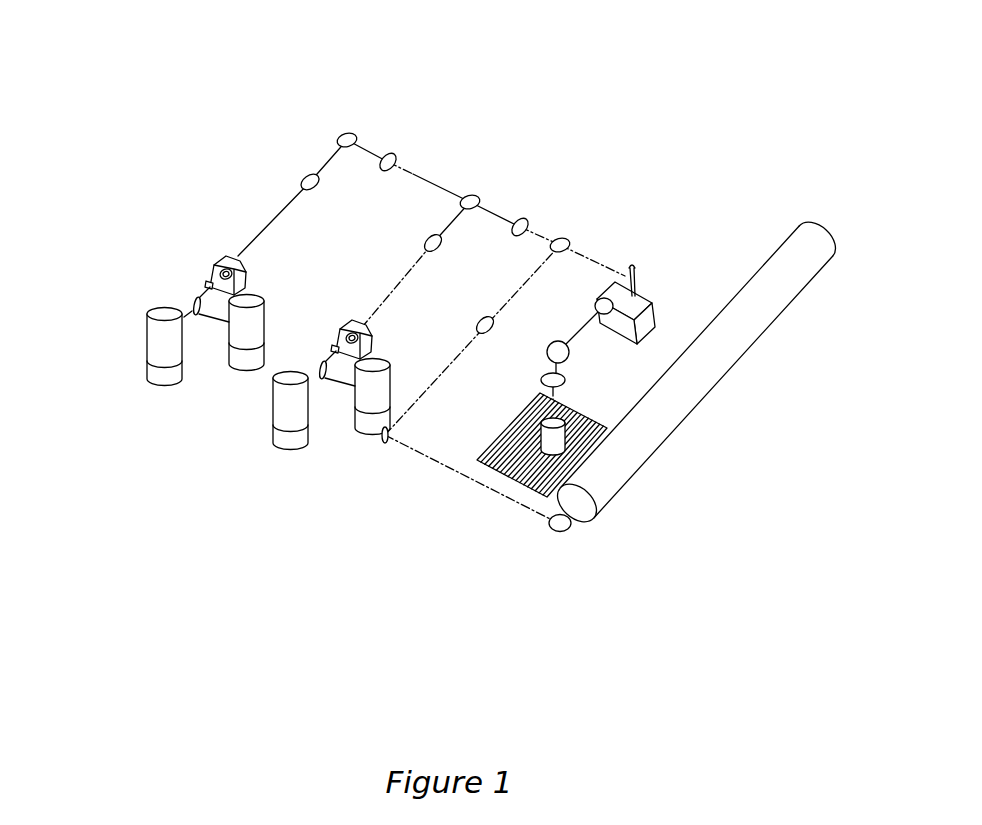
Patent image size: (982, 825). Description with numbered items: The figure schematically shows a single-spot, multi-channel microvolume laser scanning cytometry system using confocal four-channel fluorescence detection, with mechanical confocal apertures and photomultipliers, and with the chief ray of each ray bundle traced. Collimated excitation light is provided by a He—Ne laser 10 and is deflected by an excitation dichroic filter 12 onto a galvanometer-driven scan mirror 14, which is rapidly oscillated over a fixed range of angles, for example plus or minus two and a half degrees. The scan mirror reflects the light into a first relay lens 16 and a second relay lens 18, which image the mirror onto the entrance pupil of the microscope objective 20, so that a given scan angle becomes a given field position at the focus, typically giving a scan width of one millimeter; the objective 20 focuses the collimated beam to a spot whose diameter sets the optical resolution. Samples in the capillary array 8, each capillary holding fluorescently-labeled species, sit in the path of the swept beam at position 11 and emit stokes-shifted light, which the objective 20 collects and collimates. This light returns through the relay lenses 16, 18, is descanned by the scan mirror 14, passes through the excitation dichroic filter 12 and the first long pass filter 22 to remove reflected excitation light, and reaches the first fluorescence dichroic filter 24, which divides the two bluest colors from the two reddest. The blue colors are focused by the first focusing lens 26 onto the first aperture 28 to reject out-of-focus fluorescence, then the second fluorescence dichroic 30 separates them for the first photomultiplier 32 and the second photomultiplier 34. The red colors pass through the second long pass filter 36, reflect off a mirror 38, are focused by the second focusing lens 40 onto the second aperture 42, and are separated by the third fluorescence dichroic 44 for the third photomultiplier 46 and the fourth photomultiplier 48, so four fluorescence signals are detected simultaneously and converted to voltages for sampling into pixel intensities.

The capillary array 8 is at (503, 474).
The He—Ne laser 10 is at (640, 457).
The beam spot 11 is at (516, 506).
The excitation dichroic filter 12 is at (549, 243).
The galvanometer-driven scan mirror 14 is at (630, 277).
The relay lens 1 16 is at (633, 296).
The relay lens 2 18 is at (568, 372).
The microscope objective 20 is at (523, 409).
The long pass filter 1 22 is at (522, 214).
The fluorescence dichroic filter 1 24 is at (479, 195).
The focusing lens 1 26 is at (429, 238).
The aperture 1 28 is at (352, 320).
The fluorescence dichroic 2 30 is at (325, 366).
The photomultiplier 1 32 is at (372, 405).
The photomultiplier 2 34 is at (282, 407).
The long pass filter 2 36 is at (392, 154).
The mirror 38 is at (344, 131).
The focusing lens 2 40 is at (308, 173).
The aperture 2 42 is at (230, 256).
The fluorescence dichroic 3 44 is at (193, 302).
The photomultiplier 3 46 is at (243, 344).
The photomultiplier 4 48 is at (155, 340).